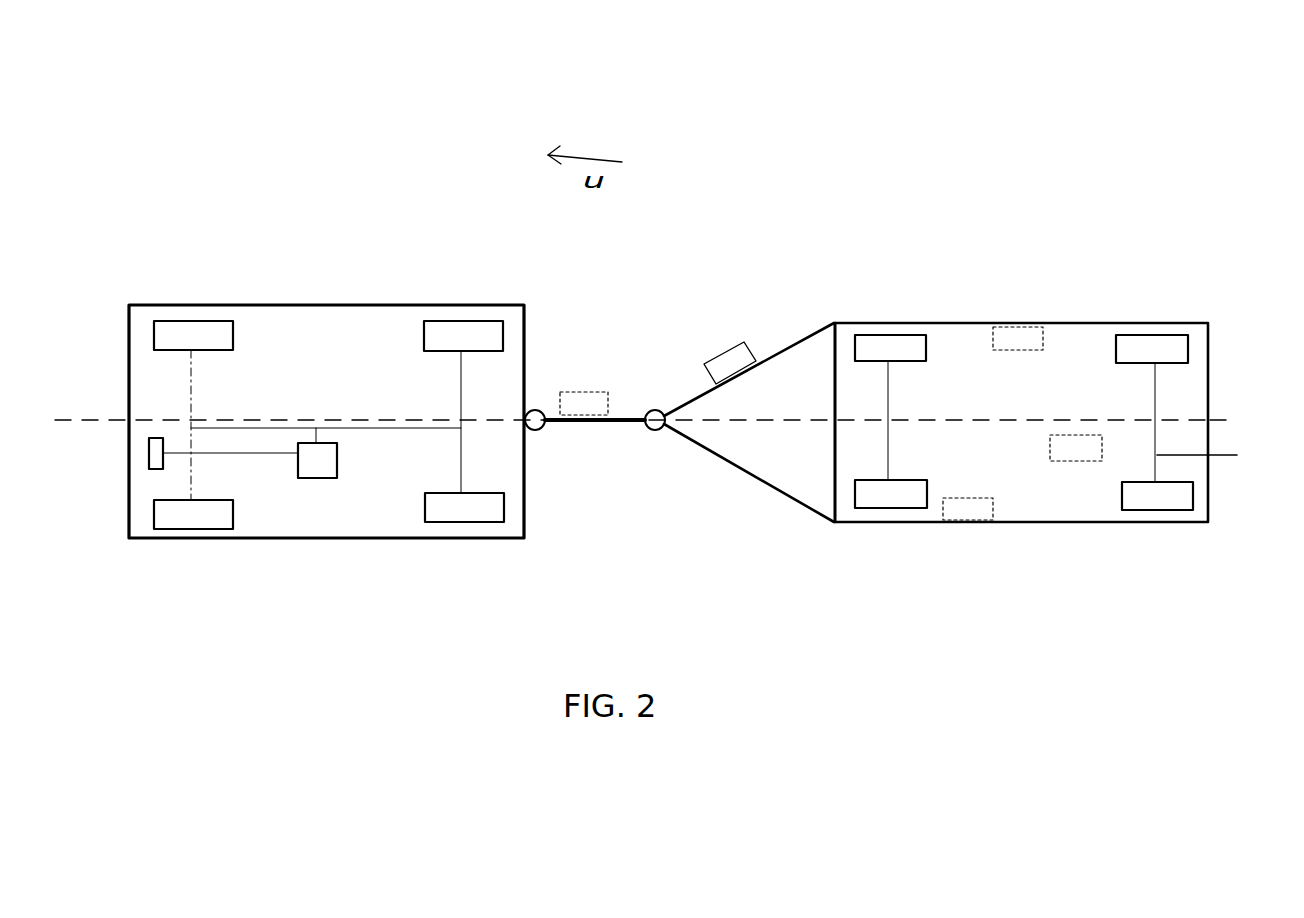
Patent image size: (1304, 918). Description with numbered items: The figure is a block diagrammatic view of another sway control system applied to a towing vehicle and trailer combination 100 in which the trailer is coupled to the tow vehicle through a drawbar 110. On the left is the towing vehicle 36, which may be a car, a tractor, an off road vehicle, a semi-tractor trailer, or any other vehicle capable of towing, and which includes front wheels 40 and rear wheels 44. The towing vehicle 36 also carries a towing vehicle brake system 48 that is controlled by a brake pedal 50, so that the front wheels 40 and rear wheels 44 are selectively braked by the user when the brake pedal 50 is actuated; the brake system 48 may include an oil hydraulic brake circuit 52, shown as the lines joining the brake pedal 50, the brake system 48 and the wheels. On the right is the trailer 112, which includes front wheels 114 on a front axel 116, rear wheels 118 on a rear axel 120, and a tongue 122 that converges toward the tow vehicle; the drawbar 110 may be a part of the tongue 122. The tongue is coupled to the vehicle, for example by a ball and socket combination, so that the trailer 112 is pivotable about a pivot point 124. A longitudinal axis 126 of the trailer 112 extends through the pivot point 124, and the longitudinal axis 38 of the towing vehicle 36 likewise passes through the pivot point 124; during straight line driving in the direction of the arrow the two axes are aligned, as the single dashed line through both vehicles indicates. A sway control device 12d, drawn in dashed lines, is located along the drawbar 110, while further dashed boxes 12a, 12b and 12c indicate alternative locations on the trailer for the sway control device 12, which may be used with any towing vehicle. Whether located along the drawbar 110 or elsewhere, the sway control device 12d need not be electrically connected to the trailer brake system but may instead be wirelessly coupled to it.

The towing vehicle and trailer combination 100 is at (558, 94).
The towing vehicle 36 is at (303, 300).
The longitudinal axis of the towing vehicle 38 is at (62, 415).
The front wheels 40 is at (190, 318).
The rear wheels 44 is at (462, 318).
The towing vehicle brake system 48 is at (317, 460).
The brake pedal 50 is at (145, 462).
The oil hydraulic brake circuit 52 is at (373, 430).
The drawbar 110 is at (627, 415).
The pivot point 124 is at (538, 428).
The sway control device 12 is at (720, 353).
The sensor location a 12a is at (1018, 339).
The sensor location b 12b is at (968, 510).
The sensor location c 12c is at (1076, 449).
The sway control device 12d is at (584, 404).
The trailer 112 is at (963, 322).
The front wheels 114 is at (888, 333).
The front axel 116 is at (887, 388).
The rear wheels 118 is at (1145, 333).
The rear axel 120 is at (1213, 454).
The tongue 122 is at (732, 482).
The longitudinal axis of the trailer 126 is at (1227, 415).